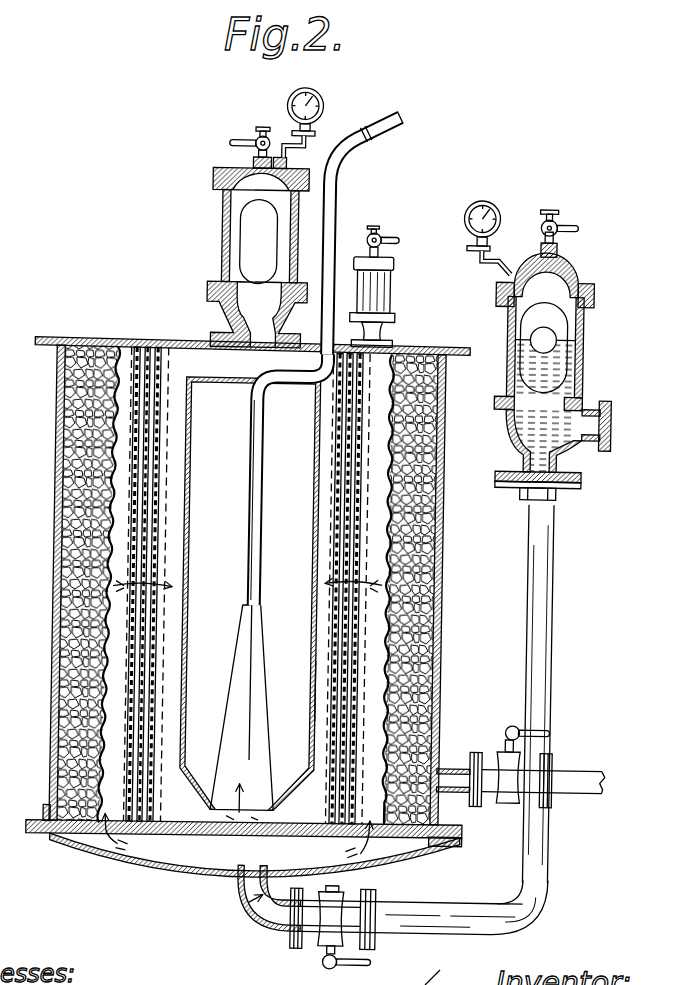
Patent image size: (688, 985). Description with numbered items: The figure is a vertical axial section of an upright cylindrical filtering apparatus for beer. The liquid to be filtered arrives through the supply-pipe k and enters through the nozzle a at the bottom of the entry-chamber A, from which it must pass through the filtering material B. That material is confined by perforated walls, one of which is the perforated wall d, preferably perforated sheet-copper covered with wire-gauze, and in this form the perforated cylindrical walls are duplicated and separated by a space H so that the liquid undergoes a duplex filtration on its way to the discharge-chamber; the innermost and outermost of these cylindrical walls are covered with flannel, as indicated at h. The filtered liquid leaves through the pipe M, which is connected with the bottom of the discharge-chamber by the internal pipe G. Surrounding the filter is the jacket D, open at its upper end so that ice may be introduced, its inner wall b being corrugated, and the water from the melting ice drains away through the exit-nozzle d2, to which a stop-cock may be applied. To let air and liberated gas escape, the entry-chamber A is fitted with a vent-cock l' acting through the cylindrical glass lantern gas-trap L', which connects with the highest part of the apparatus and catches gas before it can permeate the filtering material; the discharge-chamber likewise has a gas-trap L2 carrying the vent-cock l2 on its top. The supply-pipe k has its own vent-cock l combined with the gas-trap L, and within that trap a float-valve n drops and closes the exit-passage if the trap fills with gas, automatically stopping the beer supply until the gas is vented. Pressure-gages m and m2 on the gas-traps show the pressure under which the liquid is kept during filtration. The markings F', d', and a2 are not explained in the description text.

The jacket D is at (53, 683).
The entry-chamber A is at (244, 819).
The filtering material B is at (333, 625).
The partition wall of inner vessel F' is at (317, 691).
The internal pipe G is at (243, 712).
The space H is at (156, 584).
The flannel covering h is at (348, 588).
The inner wall of the jacket b is at (245, 586).
The nozzle a is at (325, 659).
The perforated wall d is at (114, 813).
The passages at top of coils d' is at (247, 592).
The exit-nozzle d2 is at (452, 777).
The supply-pipe k is at (527, 641).
The discharge-pipe M is at (337, 203).
The gas-trap L is at (553, 371).
The float-valve n is at (543, 347).
The outlet branch a2 is at (612, 425).
The pressure-gage m is at (490, 230).
The vent-cock l is at (559, 218).
The gas-trap L2 is at (246, 252).
The vent-cock l2 is at (250, 132).
The pressure-gage m2 is at (316, 120).
The gas-trap L' is at (382, 302).
The vent-cock l' is at (383, 235).